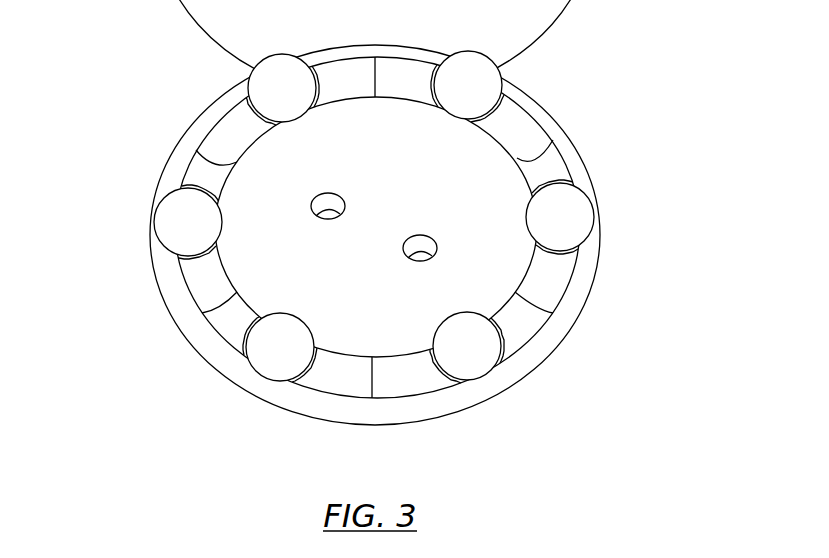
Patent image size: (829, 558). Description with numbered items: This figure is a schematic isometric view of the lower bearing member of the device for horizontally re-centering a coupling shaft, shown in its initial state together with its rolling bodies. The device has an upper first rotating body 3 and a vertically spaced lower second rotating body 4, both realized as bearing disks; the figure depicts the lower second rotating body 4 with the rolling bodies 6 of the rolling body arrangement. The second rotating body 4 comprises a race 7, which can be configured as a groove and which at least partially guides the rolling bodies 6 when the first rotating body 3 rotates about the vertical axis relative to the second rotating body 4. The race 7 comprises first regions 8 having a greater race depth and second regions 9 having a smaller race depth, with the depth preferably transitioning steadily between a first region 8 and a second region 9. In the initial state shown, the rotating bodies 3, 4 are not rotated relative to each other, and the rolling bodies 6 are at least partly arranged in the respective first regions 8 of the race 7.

The first rotating body 3 is at (592, 295).
The second rotating body 4 is at (375, 37).
The rolling body 6 is at (277, 87).
The race 7 is at (183, 303).
The first region 8 is at (253, 115).
The second region 9 is at (218, 138).